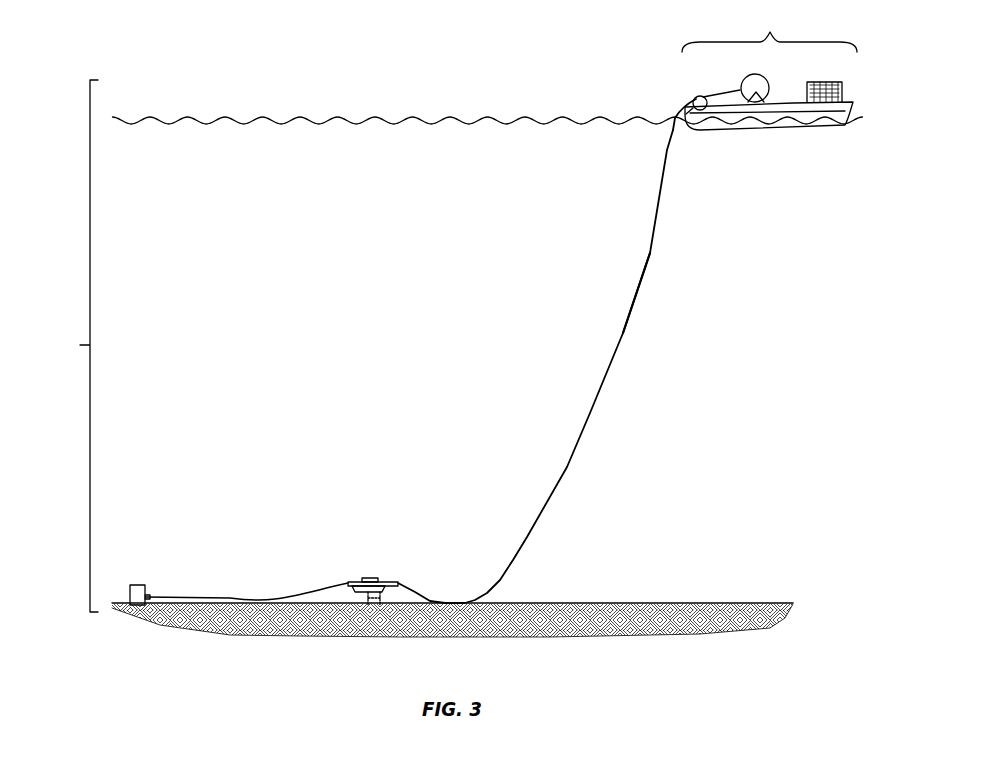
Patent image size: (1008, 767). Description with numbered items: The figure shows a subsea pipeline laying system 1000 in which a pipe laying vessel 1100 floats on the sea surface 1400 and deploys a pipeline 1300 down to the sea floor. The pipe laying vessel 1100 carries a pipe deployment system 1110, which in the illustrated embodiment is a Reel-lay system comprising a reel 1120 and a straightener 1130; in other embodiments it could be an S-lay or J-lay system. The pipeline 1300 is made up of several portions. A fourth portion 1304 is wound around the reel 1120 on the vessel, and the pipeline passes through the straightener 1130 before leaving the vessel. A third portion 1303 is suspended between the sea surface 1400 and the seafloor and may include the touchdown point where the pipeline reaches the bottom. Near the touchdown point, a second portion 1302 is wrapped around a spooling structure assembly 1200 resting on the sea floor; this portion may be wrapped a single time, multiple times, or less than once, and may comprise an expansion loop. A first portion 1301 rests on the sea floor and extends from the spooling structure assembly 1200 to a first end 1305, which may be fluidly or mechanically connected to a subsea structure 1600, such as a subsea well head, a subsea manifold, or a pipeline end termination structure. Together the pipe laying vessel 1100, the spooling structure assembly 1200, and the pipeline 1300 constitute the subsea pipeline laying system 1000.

The subsea pipeline laying system 1000 is at (59, 346).
The pipe laying vessel 1100 is at (762, 130).
The pipe deployment system 1110 is at (769, 31).
The reel 1120 is at (785, 74).
The straightener 1130 is at (690, 100).
The spooling structure assembly 1200 is at (368, 580).
The pipeline 1300 is at (593, 413).
The first portion 1301 is at (255, 597).
The second portion 1302 is at (378, 590).
The third portion 1303 is at (615, 365).
The fourth portion 1304 is at (756, 76).
The first end 1305 is at (148, 595).
The sea surface 1400 is at (262, 118).
The subsea structure 1600 is at (137, 600).